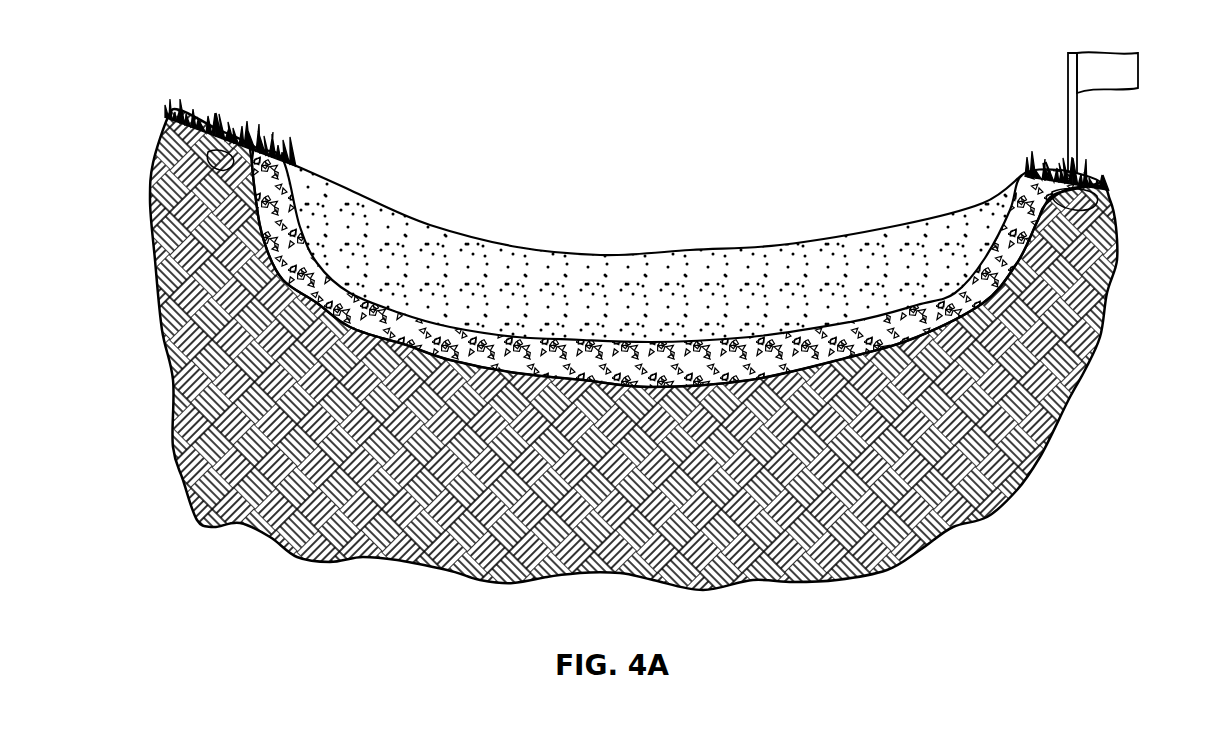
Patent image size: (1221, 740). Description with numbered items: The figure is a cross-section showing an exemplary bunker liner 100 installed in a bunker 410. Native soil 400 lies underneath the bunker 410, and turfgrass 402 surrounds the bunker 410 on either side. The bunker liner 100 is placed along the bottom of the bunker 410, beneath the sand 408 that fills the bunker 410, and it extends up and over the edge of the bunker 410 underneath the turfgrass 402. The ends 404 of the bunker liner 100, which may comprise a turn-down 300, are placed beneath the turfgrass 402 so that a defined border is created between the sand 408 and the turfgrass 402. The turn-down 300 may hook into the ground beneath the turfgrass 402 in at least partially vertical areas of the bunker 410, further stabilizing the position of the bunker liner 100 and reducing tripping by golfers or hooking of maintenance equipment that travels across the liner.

The bunker liner 100 is at (548, 381).
The turn-down 300 is at (212, 160).
The native soil 400 is at (165, 266).
The turfgrass 402 is at (200, 106).
The ends 404 is at (283, 162).
The sand 408 is at (676, 273).
The bunker 410 is at (528, 210).